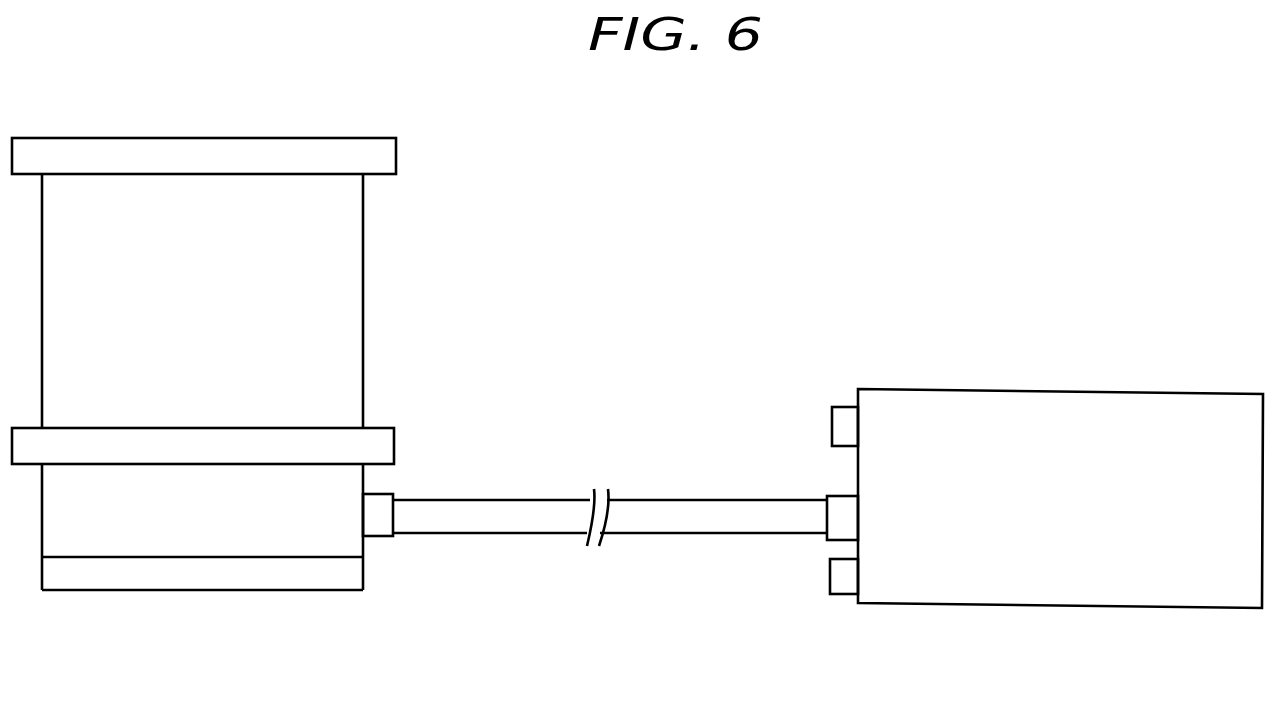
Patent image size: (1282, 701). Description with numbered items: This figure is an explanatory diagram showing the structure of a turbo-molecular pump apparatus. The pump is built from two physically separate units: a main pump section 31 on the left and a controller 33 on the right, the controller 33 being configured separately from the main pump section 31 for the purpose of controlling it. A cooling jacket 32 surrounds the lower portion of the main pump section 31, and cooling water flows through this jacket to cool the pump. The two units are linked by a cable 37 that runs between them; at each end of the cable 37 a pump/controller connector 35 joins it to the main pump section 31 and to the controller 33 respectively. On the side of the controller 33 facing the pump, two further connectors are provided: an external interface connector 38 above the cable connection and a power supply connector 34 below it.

The main pump section 31 is at (348, 330).
The cooling jacket 32 is at (330, 575).
The controller 33 is at (1003, 420).
The power supply connector 34 is at (847, 576).
The pump/controller connectors 35 is at (374, 518).
The cable 37 is at (477, 508).
The external interface connector 38 is at (845, 420).